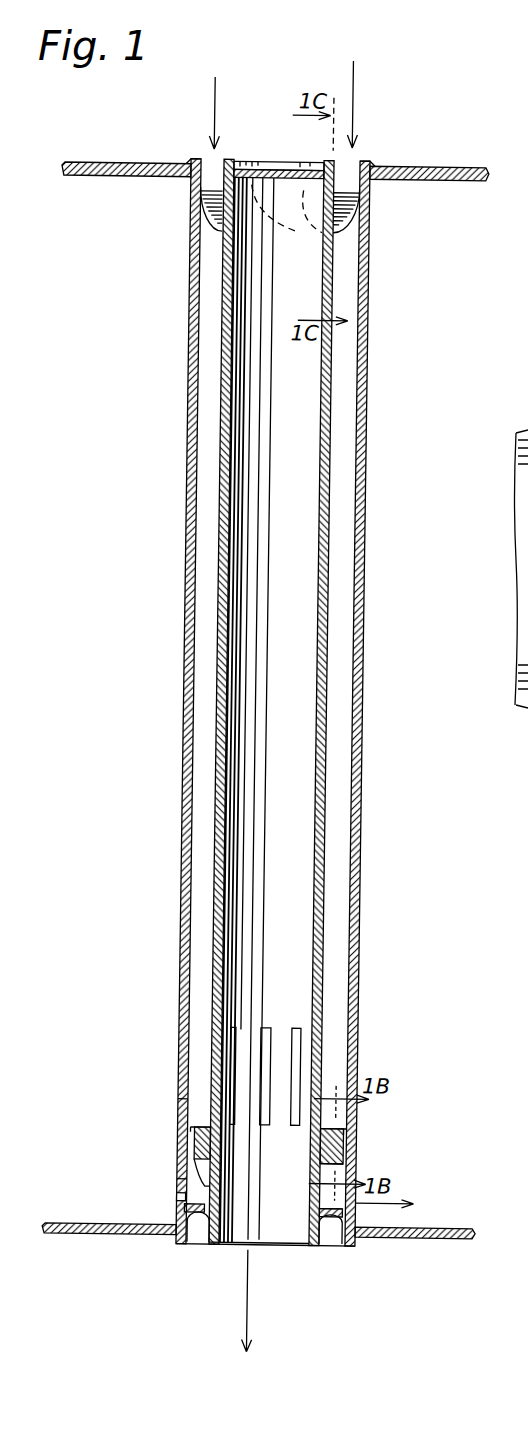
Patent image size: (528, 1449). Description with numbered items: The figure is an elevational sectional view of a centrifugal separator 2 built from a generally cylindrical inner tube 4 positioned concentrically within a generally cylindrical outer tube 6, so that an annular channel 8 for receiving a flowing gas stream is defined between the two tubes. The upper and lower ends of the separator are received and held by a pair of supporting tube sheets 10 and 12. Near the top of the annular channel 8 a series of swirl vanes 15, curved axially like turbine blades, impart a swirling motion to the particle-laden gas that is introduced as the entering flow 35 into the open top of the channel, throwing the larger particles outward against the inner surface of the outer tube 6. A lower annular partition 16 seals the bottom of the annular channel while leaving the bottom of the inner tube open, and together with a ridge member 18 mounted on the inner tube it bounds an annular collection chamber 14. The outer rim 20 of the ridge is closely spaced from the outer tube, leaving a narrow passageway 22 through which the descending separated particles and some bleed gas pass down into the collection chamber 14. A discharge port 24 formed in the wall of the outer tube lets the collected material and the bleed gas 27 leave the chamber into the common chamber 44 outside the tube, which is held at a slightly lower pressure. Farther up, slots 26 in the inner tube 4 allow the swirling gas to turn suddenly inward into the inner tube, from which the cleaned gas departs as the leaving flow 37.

The centrifugal separator 2 is at (398, 366).
The inner tube 4 is at (225, 438).
The outer tube 6 is at (190, 535).
The annular channel 8 is at (342, 472).
The supporting tube sheet 10 is at (134, 128).
The supporting tube sheet 12 is at (98, 1234).
The annular collection chamber 14 is at (327, 1197).
The swirl vanes 15 is at (215, 218).
The lower annular partition 16 is at (337, 1218).
The ridge member 18 is at (206, 1128).
The outer rim 20 is at (198, 1145).
The narrow passageway 22 is at (185, 1110).
The discharge port 24 is at (178, 1197).
The slots 26 is at (306, 1027).
The bleed gas 27 is at (404, 1205).
The entering flow 35 is at (214, 78).
The leaving flow 37 is at (272, 166).
The common chamber 44 is at (460, 1195).